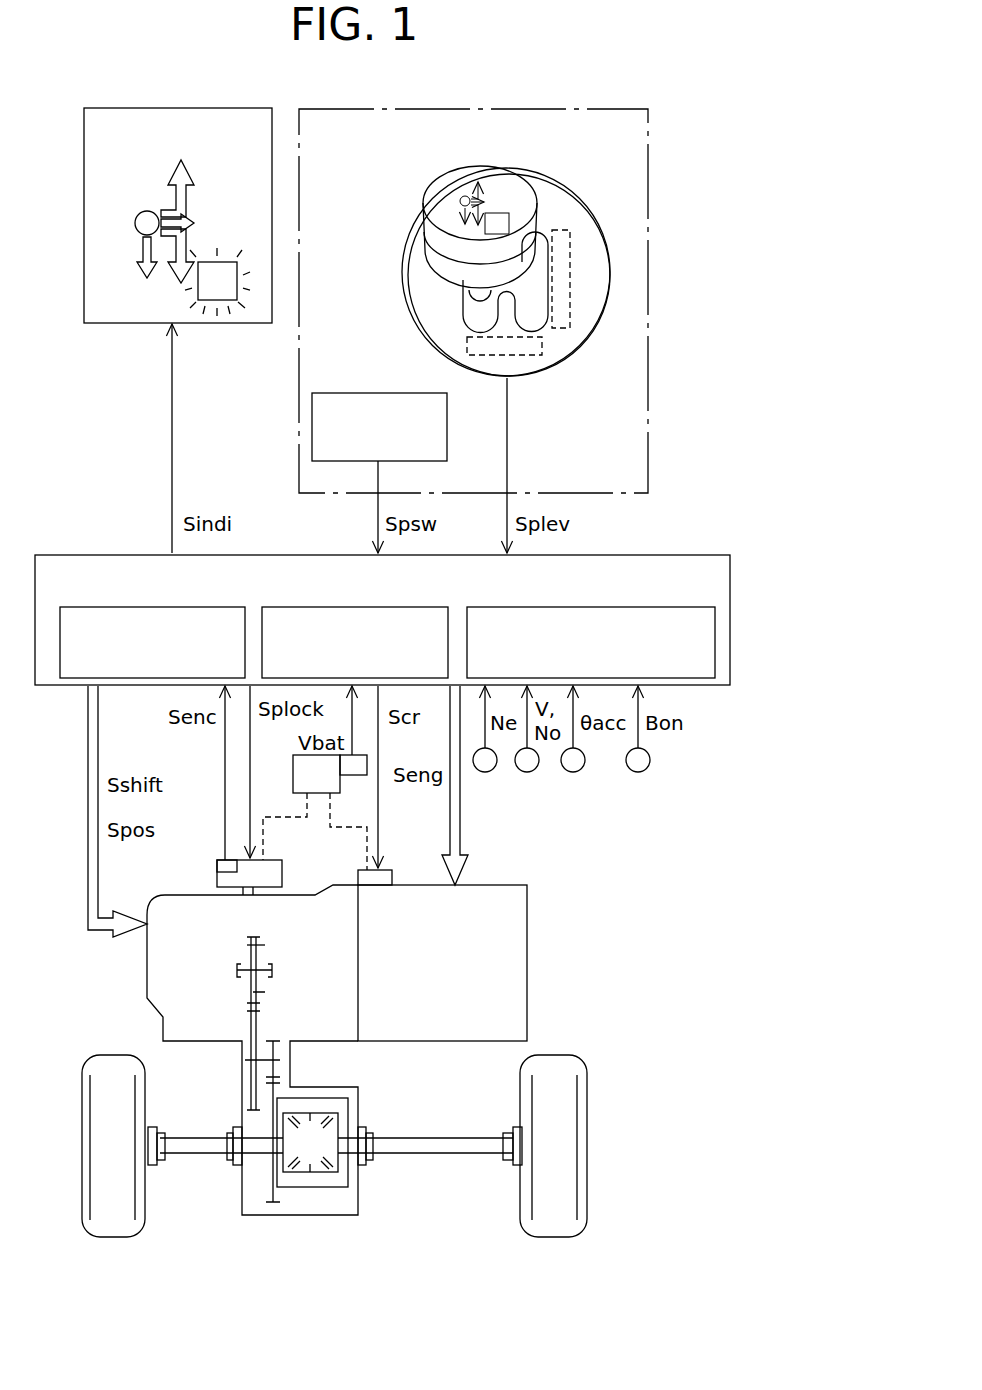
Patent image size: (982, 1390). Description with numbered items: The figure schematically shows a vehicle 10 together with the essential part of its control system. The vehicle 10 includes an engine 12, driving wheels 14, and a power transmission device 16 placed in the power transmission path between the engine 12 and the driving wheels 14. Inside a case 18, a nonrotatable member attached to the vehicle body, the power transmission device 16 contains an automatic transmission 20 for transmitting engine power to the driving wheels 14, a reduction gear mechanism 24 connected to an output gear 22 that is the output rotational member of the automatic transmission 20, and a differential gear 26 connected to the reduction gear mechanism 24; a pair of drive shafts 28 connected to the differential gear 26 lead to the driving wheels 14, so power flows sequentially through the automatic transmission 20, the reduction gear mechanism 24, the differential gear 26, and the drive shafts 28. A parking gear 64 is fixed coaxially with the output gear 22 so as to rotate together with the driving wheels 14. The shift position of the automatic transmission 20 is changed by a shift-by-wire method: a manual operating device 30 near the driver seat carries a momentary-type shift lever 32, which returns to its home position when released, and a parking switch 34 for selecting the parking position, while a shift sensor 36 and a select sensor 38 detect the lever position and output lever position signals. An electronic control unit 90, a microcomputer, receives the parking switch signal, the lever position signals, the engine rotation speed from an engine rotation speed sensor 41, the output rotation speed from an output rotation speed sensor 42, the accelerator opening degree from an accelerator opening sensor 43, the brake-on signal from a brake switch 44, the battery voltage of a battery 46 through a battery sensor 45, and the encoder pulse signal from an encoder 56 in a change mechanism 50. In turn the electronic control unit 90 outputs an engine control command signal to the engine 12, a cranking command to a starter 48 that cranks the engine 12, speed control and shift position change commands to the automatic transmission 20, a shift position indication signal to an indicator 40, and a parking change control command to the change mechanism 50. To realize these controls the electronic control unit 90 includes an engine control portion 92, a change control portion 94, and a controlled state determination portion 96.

The vehicle 10 is at (585, 75).
The engine 12 is at (500, 898).
The driving wheels 14 is at (117, 1063).
The power transmission device 16 is at (300, 875).
The case 18 is at (200, 893).
The automatic transmission 20 is at (160, 912).
The output gear 22 is at (253, 937).
The reduction gear mechanism 24 is at (277, 1020).
The differential gear 26 is at (333, 1200).
The drive shafts 28 is at (182, 1145).
The manual operating device 30 is at (445, 108).
The shift lever 32 is at (468, 175).
The parking switch 34 is at (335, 400).
The shift sensor 36 is at (578, 340).
The select sensor 38 is at (530, 357).
The indicator 40 is at (248, 113).
The engine rotation speed sensor 41 is at (488, 772).
The output rotation speed sensor 42 is at (530, 772).
The accelerator opening sensor 43 is at (576, 772).
The brake switch 44 is at (641, 772).
The battery sensor 45 is at (352, 768).
The battery 46 is at (293, 778).
The starter 48 is at (384, 872).
The change mechanism 50 is at (272, 865).
The encoder 56 is at (217, 863).
The parking gear 64 is at (260, 945).
The electronic control unit 90 is at (625, 565).
The engine control portion 92 is at (185, 607).
The change control portion 94 is at (390, 607).
The controlled state determination portion 96 is at (650, 607).